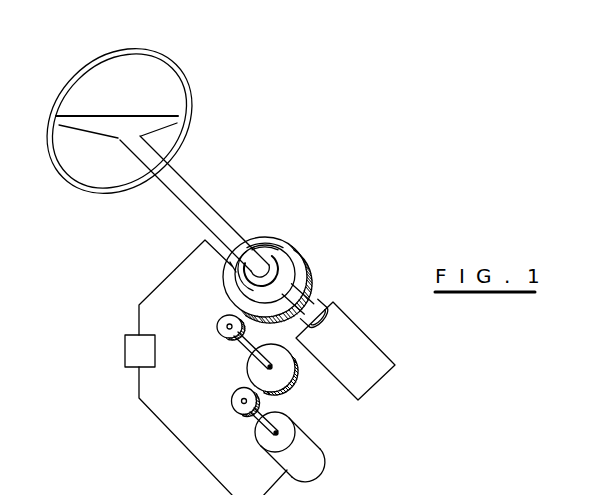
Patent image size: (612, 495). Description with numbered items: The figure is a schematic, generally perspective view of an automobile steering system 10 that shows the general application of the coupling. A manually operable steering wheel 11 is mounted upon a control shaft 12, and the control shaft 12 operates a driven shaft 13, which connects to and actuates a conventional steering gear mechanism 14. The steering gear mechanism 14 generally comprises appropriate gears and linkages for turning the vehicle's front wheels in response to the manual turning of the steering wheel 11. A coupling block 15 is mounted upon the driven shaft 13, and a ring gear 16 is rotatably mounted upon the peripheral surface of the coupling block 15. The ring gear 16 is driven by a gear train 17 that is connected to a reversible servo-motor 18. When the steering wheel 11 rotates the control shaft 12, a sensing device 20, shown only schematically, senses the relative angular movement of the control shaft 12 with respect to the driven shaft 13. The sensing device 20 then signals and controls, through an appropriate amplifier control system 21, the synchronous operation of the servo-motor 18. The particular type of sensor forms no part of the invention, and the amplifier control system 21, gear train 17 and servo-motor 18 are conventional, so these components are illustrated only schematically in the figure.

The automobile steering system 10 is at (379, 138).
The steering wheel 11 is at (190, 77).
The control shaft 12 is at (214, 205).
The driven shaft 13 is at (333, 302).
The steering gear mechanism 14 is at (363, 375).
The coupling block 15 is at (300, 247).
The ring gear 16 is at (317, 282).
The gear train 17 is at (235, 341).
The reversible servo-motor 18 is at (322, 457).
The sensing device 20 is at (279, 256).
The amplifier control system 21 is at (125, 346).